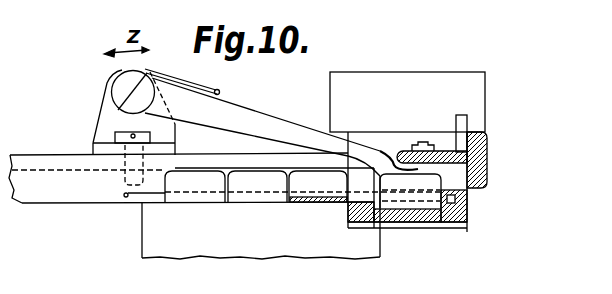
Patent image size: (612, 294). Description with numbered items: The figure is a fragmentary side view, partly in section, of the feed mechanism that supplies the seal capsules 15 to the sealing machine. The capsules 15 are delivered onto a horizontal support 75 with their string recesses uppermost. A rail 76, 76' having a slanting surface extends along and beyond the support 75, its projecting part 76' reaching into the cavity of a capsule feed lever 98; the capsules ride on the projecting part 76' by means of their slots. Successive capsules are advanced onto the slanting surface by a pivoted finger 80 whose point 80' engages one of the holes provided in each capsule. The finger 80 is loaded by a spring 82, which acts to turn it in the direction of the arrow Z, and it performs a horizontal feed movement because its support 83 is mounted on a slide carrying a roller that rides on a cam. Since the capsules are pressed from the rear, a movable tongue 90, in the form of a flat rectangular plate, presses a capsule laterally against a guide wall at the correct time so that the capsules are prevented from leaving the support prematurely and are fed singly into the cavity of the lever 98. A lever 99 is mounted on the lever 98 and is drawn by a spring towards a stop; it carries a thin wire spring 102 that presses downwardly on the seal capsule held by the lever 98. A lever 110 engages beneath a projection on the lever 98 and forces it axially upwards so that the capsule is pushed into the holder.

The capsule 15 is at (255, 198).
The horizontal support 75 is at (207, 237).
The rail 76 is at (129, 221).
The projecting part of the rail 76' is at (400, 219).
The pivoted finger 80 is at (262, 127).
The point of the finger 80' is at (422, 232).
The spring 82 is at (219, 90).
The support of the finger 83 is at (110, 108).
The movable tongue 90 is at (325, 204).
The capsule feed lever 98 is at (468, 208).
The lever 99 is at (448, 151).
The thin wire spring 102 is at (397, 160).
The lever 110 is at (488, 158).